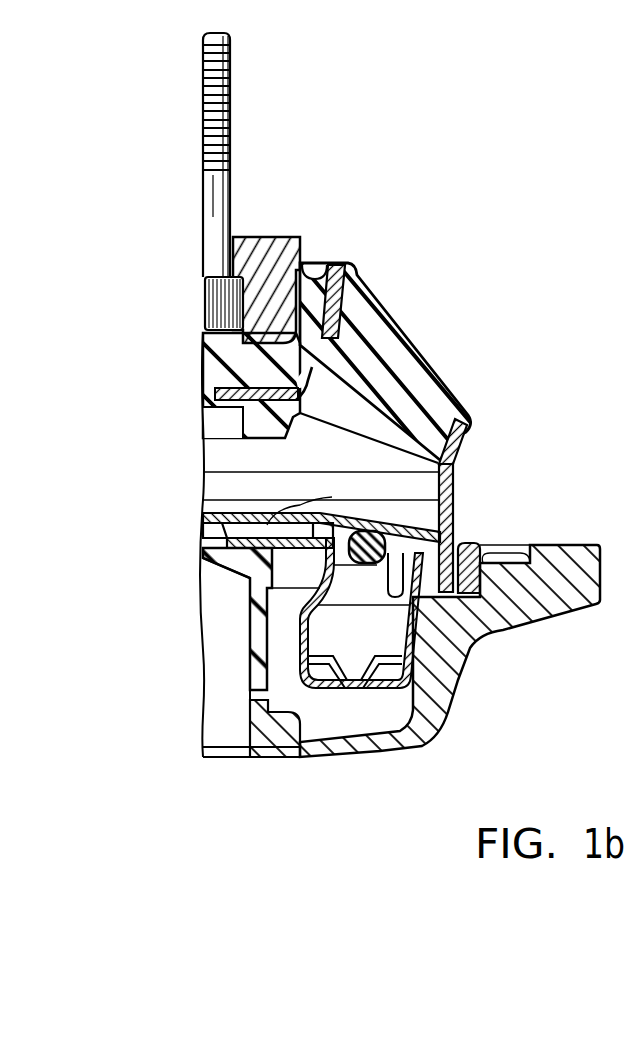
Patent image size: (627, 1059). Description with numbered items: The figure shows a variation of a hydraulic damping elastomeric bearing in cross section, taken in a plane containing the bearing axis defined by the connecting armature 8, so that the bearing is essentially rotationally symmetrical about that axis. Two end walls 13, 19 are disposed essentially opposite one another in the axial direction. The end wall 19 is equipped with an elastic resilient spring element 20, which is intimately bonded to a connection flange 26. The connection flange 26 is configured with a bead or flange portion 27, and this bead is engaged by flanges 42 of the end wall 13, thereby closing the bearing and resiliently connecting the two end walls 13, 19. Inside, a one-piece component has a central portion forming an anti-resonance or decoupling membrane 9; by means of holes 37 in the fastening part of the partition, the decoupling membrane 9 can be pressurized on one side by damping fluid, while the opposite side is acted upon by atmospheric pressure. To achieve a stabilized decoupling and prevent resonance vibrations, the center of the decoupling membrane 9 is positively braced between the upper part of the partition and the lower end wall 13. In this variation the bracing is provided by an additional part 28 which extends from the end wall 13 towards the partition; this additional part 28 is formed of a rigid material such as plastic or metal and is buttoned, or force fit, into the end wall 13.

The connecting armature 8 is at (231, 138).
The end wall 19 is at (356, 278).
The spring element 20 is at (398, 355).
The holes 37 is at (300, 506).
The connection flange 26 is at (459, 460).
The decoupling membrane 9 is at (441, 500).
The flange portion 27 is at (482, 545).
The flanges 42 is at (530, 544).
The additional part 28 is at (257, 584).
The end wall 13 is at (306, 757).